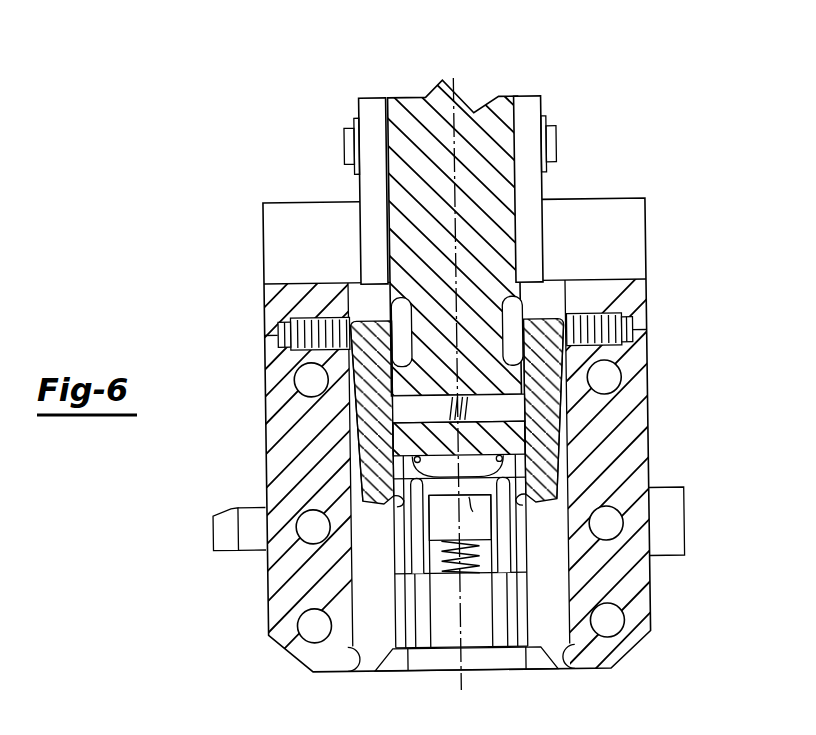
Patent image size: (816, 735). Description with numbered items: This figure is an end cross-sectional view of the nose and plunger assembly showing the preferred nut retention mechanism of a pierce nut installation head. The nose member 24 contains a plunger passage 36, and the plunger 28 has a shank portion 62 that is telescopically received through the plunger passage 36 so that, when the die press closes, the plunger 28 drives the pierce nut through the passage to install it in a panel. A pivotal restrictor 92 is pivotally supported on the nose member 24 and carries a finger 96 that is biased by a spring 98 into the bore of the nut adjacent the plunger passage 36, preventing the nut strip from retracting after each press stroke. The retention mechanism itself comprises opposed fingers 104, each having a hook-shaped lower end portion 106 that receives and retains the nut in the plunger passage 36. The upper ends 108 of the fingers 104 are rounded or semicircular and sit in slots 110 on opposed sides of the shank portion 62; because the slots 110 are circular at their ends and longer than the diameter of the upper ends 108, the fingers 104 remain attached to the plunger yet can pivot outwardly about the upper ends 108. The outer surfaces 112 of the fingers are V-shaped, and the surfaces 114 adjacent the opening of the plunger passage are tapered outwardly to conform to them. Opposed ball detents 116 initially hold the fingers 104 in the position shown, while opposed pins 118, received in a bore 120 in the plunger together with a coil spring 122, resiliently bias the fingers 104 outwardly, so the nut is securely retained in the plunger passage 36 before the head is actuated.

The nose member 24 is at (436, 452).
The plunger 28 is at (461, 268).
The plunger passage 36 is at (366, 552).
The shank portion 62 is at (451, 384).
The pivotal restrictor 92 is at (459, 498).
The finger 96 is at (174, 532).
The spring 98 is at (457, 583).
The opposed fingers 104 is at (465, 411).
The hook-shaped lower end portion 106 is at (459, 526).
The upper ends 108 is at (456, 303).
The slots 110 is at (456, 196).
The outer surfaces 112 is at (456, 413).
The surfaces 114 is at (456, 689).
The ball detents 116 is at (470, 308).
The pins 118 is at (460, 483).
The bore 120 is at (458, 390).
The coil spring 122 is at (542, 416).